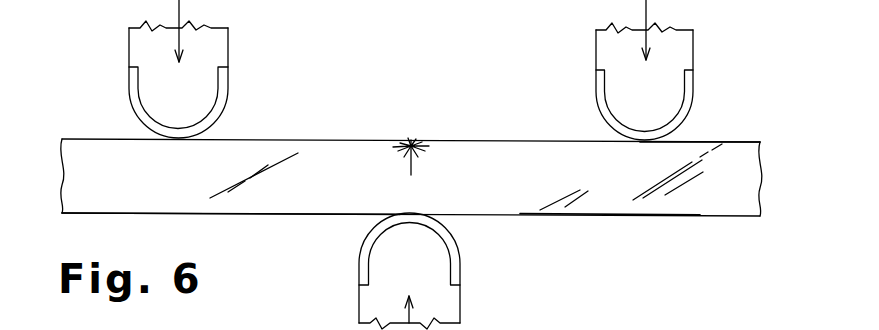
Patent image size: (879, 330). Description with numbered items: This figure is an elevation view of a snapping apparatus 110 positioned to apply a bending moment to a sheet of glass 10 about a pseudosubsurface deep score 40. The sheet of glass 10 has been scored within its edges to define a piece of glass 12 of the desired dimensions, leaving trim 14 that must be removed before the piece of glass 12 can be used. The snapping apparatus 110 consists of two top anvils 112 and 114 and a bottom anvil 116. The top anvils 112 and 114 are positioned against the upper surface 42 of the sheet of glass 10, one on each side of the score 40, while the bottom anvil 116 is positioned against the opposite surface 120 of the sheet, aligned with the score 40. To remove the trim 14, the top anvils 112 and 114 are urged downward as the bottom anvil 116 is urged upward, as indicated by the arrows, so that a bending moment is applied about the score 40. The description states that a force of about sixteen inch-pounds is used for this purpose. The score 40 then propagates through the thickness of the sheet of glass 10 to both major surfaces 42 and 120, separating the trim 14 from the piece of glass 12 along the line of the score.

The sheet of glass 10 is at (460, 191).
The piece of glass 12 is at (248, 207).
The trim 14 is at (605, 197).
The pseudosubsurface deep score 40 is at (418, 162).
The surface 42 is at (731, 142).
The snapping apparatus 110 is at (498, 69).
The top anvil 112 is at (687, 50).
The top anvil 114 is at (218, 50).
The bottom anvil 116 is at (366, 310).
The surface 120 is at (585, 216).